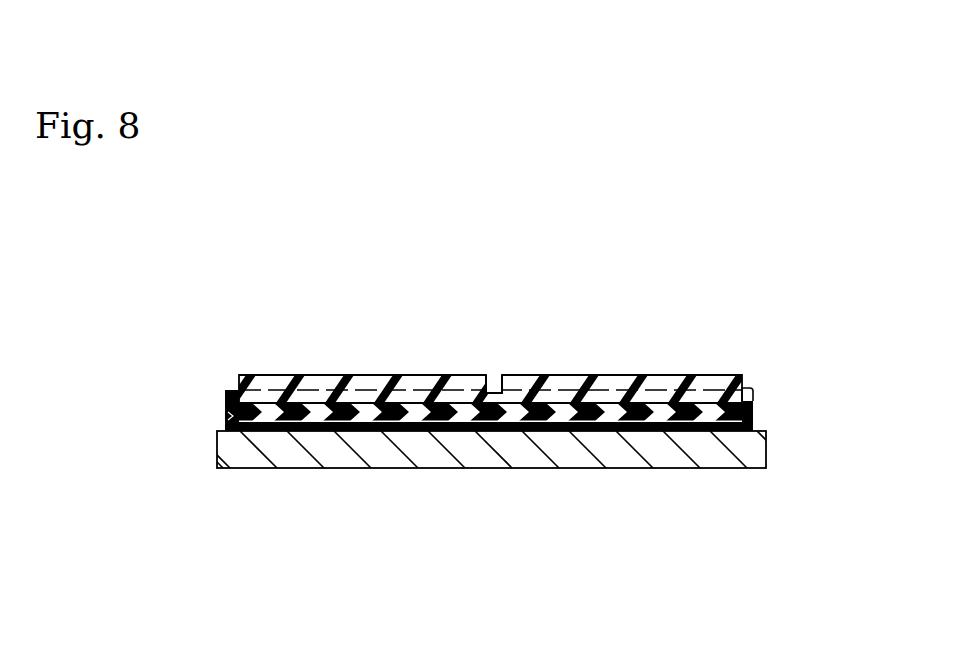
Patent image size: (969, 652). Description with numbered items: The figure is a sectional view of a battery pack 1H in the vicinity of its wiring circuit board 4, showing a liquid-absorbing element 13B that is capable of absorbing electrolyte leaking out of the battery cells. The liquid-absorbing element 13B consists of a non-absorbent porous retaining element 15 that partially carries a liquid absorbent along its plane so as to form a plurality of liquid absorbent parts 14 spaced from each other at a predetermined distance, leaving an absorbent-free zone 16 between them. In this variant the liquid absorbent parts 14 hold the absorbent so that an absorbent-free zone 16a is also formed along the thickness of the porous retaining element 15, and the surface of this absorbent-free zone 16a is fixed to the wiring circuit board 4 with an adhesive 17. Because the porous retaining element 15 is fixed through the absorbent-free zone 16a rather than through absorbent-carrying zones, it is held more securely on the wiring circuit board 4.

The battery pack 1H is at (182, 286).
The wiring circuit board 4 is at (678, 468).
The liquid-absorbing element 13B is at (257, 375).
The liquid absorbent parts 14 is at (672, 375).
The porous retaining element 15 is at (746, 387).
The absorbent-free zone 16 is at (490, 391).
The absorbent-free zone 16a is at (752, 406).
The adhesive 17 is at (755, 424).